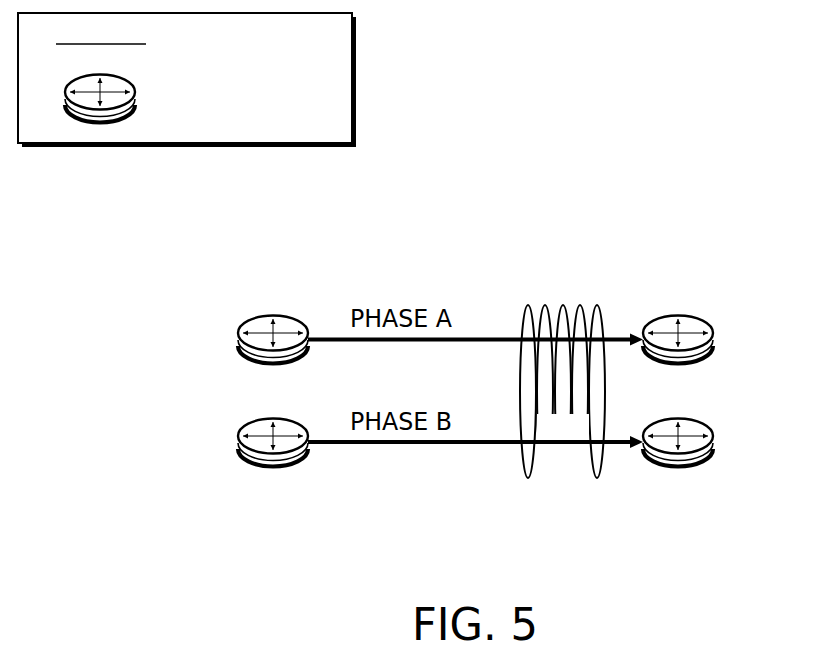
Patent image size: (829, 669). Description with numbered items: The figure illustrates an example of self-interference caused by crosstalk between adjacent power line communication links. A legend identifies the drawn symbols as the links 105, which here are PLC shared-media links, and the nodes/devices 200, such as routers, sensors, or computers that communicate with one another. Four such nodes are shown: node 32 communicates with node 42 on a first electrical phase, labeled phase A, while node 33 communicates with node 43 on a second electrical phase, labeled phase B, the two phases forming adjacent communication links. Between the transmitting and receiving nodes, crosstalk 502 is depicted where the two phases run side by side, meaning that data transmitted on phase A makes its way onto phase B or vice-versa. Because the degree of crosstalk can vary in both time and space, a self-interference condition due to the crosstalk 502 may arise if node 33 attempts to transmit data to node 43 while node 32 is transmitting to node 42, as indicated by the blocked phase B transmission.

The links 105 is at (176, 43).
The nodes/devices 200 is at (190, 99).
The node 32 is at (273, 359).
The node 33 is at (273, 462).
The node 42 is at (678, 359).
The node 43 is at (678, 462).
The crosstalk 502 is at (615, 281).